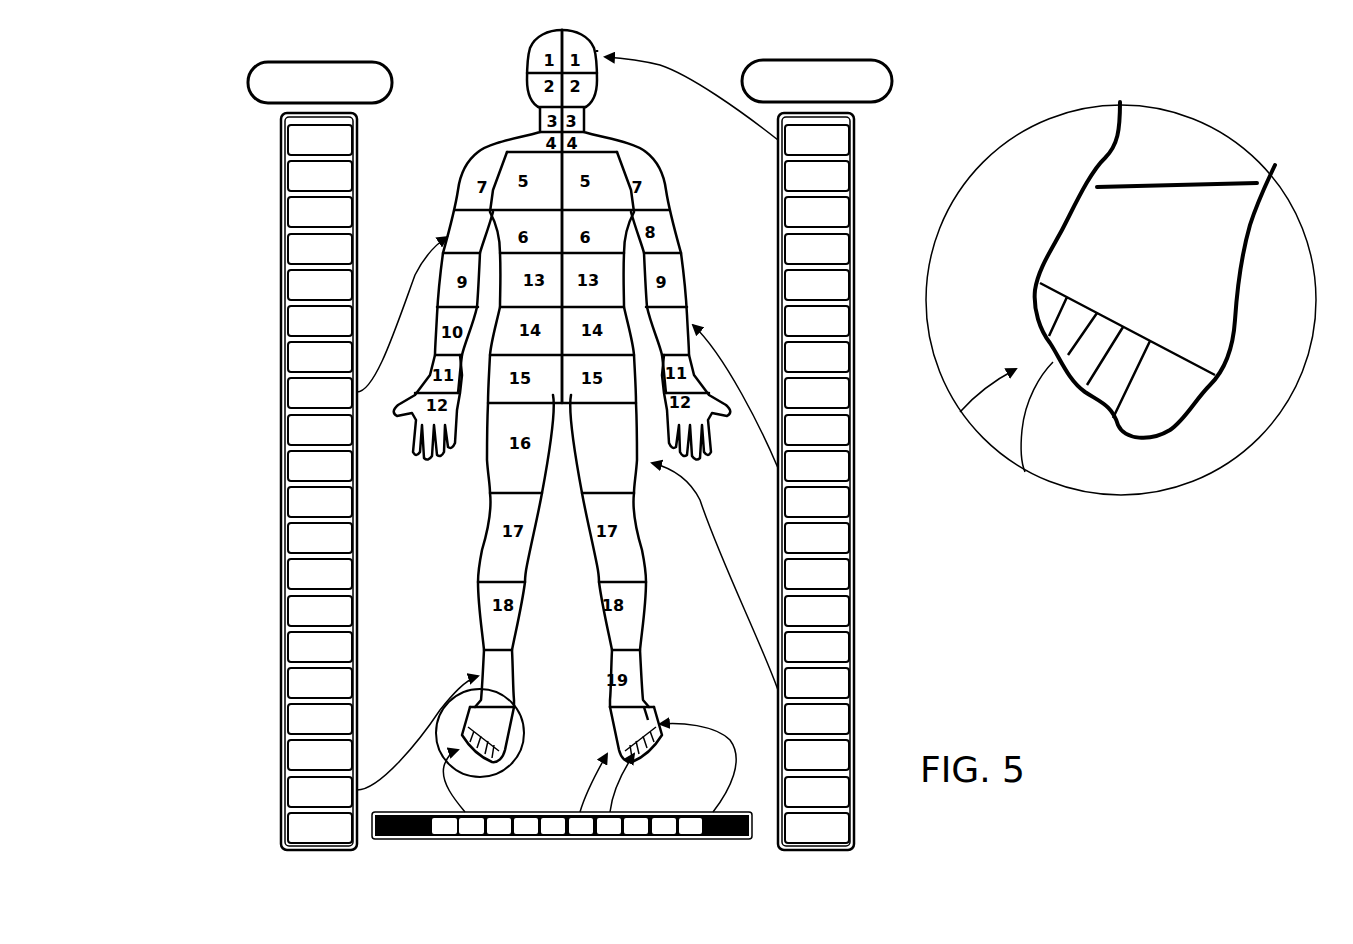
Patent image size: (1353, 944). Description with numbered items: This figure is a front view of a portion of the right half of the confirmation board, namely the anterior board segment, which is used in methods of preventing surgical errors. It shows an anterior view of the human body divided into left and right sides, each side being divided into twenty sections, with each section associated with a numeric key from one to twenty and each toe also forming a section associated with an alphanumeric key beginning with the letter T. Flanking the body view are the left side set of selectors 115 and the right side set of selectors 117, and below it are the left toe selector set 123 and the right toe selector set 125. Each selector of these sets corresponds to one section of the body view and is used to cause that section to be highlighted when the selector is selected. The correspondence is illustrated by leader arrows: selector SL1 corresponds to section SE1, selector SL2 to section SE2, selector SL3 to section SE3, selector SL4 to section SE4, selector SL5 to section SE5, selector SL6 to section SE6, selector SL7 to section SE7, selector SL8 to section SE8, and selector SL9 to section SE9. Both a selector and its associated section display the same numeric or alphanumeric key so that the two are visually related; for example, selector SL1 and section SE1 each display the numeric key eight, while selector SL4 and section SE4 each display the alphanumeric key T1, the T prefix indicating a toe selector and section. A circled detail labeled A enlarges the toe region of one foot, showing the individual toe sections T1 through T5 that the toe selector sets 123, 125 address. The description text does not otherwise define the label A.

The section SE1 is at (438, 202).
The section SE2 is at (451, 646).
The section SE3 is at (502, 761).
The section SE4 is at (601, 709).
The section SE5 is at (654, 752).
The section SE6 is at (675, 674).
The section SE7 is at (643, 490).
The section SE8 is at (693, 293).
The section SE9 is at (639, 37).
The selector SL1 is at (317, 325).
The selector SL2 is at (332, 745).
The selector SL3 is at (448, 821).
The selector SL4 is at (551, 823).
The selector SL5 is at (633, 823).
The selector SL6 is at (701, 808).
The selector SL7 is at (802, 578).
The selector SL8 is at (823, 401).
The selector SL9 is at (776, 104).
The detail view of toes A is at (889, 439).
The left side set of selectors 115 is at (312, 477).
The right side set of selectors 117 is at (837, 470).
The left toe selector set 123 is at (543, 852).
The right toe selector set 125 is at (767, 856).